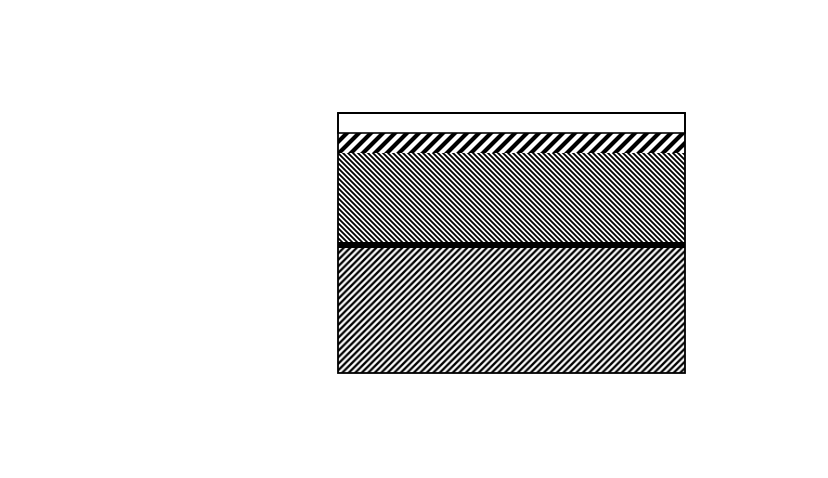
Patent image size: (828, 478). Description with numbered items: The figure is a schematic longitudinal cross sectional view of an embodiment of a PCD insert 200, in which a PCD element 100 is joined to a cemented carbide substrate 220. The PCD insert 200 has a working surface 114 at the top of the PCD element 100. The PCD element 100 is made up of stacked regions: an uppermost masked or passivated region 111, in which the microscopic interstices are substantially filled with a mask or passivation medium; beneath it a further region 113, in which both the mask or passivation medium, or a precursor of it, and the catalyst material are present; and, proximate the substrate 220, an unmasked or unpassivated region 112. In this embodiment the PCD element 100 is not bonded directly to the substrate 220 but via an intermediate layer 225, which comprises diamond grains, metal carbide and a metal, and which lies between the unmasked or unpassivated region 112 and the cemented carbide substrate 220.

The PCD insert 200 is at (305, 85).
The PCD element 100 is at (142, 115).
The masked or passivated region 111 is at (336, 125).
The further region 113 is at (336, 148).
The unmasked or unpassivated region 112 is at (336, 218).
The intermediate layer 225 is at (336, 244).
The cemented carbide substrate 220 is at (336, 312).
The working surface 114 is at (498, 112).